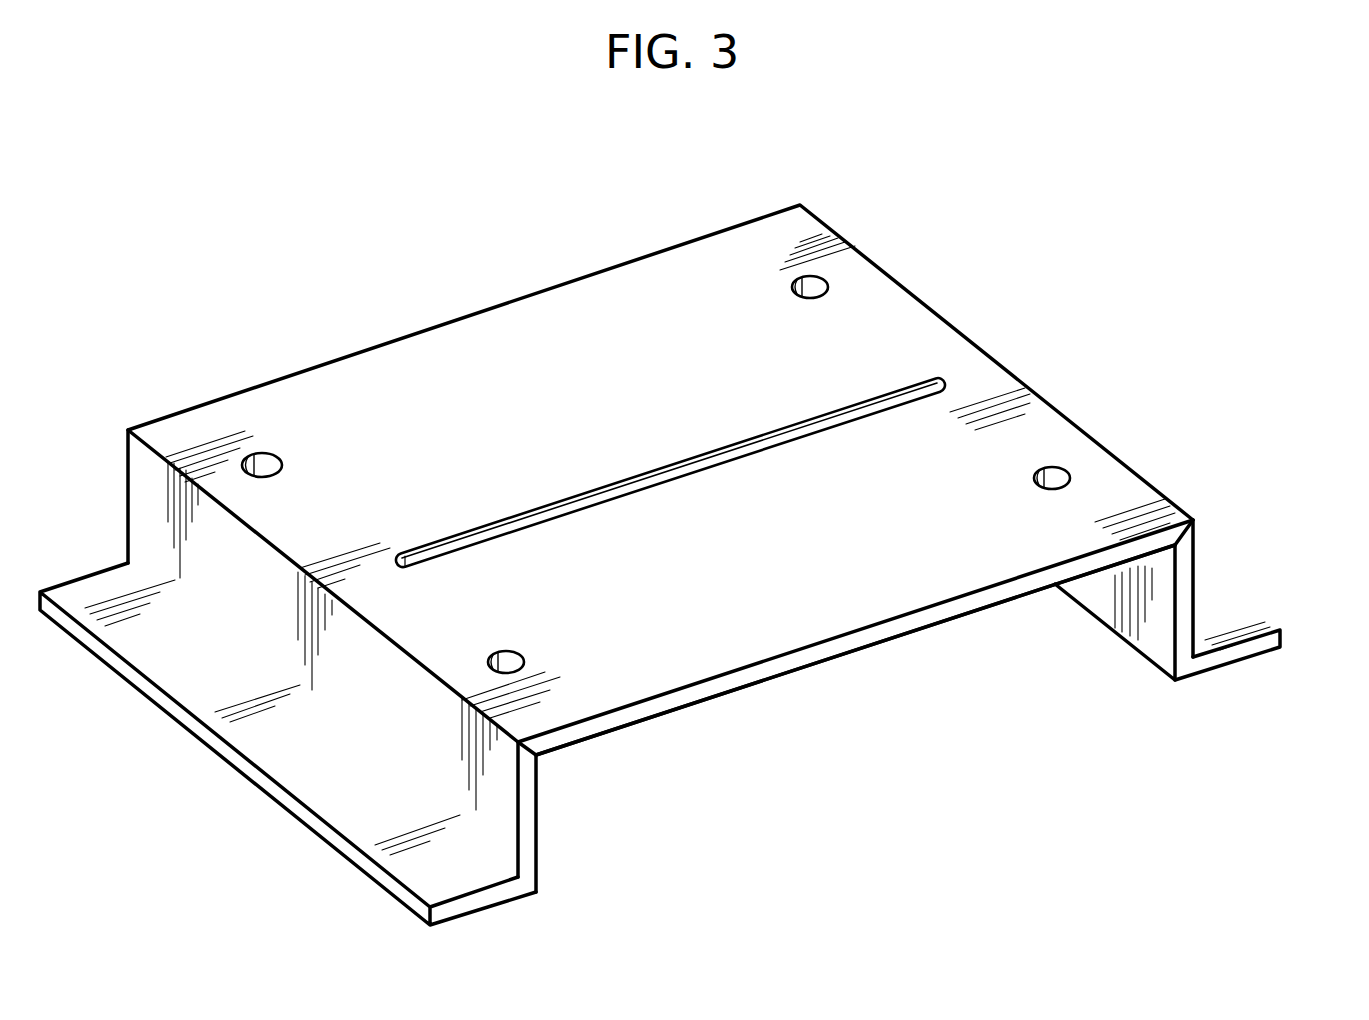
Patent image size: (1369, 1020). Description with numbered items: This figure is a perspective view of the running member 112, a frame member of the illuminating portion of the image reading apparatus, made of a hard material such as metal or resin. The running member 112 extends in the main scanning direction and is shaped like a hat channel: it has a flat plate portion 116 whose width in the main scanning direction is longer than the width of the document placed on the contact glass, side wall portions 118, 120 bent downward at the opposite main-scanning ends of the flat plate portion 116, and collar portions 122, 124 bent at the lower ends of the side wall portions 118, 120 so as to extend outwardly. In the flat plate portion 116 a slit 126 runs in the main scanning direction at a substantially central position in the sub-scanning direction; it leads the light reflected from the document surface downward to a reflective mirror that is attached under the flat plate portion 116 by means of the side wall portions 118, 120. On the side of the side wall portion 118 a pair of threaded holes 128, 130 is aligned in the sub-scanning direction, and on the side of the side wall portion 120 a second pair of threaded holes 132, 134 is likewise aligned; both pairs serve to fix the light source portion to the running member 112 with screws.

The running member 112 is at (542, 326).
The flat plate portion 116 is at (800, 613).
The side wall portion 118 is at (497, 825).
The side wall portion 120 is at (1138, 627).
The collar portion 122 is at (358, 830).
The collar portion 124 is at (1222, 605).
The slit 126 is at (657, 473).
The threaded hole 128 is at (276, 459).
The threaded hole 130 is at (515, 652).
The threaded hole 132 is at (795, 286).
The threaded hole 134 is at (1035, 479).